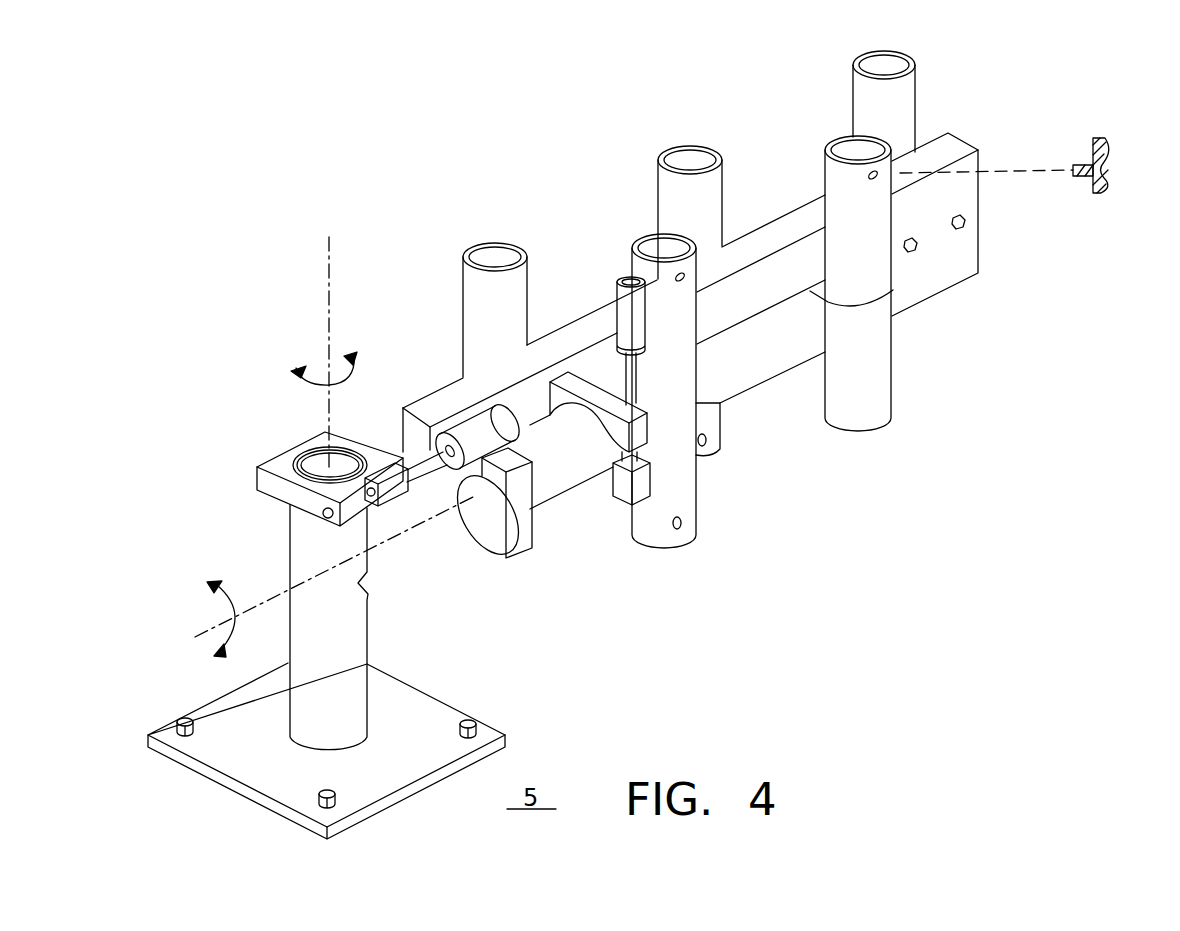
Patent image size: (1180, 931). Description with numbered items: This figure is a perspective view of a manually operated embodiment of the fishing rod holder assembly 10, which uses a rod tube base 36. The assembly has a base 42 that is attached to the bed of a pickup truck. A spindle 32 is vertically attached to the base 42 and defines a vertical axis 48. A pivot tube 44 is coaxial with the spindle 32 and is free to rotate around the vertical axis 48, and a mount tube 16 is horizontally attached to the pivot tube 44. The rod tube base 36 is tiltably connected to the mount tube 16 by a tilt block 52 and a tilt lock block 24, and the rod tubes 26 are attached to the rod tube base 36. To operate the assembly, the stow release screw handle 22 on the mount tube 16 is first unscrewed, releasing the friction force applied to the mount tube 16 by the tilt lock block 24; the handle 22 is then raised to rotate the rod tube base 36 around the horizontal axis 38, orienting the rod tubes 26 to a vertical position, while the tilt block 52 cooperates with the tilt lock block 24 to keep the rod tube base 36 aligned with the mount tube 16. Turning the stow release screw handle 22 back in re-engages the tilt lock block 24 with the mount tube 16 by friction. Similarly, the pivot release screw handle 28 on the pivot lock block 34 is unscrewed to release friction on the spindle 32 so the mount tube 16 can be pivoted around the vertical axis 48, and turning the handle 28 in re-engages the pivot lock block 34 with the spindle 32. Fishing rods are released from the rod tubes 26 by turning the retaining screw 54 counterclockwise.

The fishing rod holder assembly 10 is at (413, 210).
The mount tube 16 is at (545, 475).
The stow release screw handle 22 is at (628, 320).
The tilt lock block 24 is at (643, 485).
The rod tubes 26 is at (893, 106).
The pivot release screw handle 28 is at (487, 430).
The spindle 32 is at (313, 458).
The pivot lock block 34 is at (292, 490).
The rod tube base 36 is at (956, 258).
The horizontal axis 38 is at (212, 614).
The base 42 is at (420, 722).
The pivot tube 44 is at (340, 630).
The vertical axis 48 is at (327, 308).
The tilt block 52 is at (522, 534).
The retaining screw 54 is at (1104, 147).